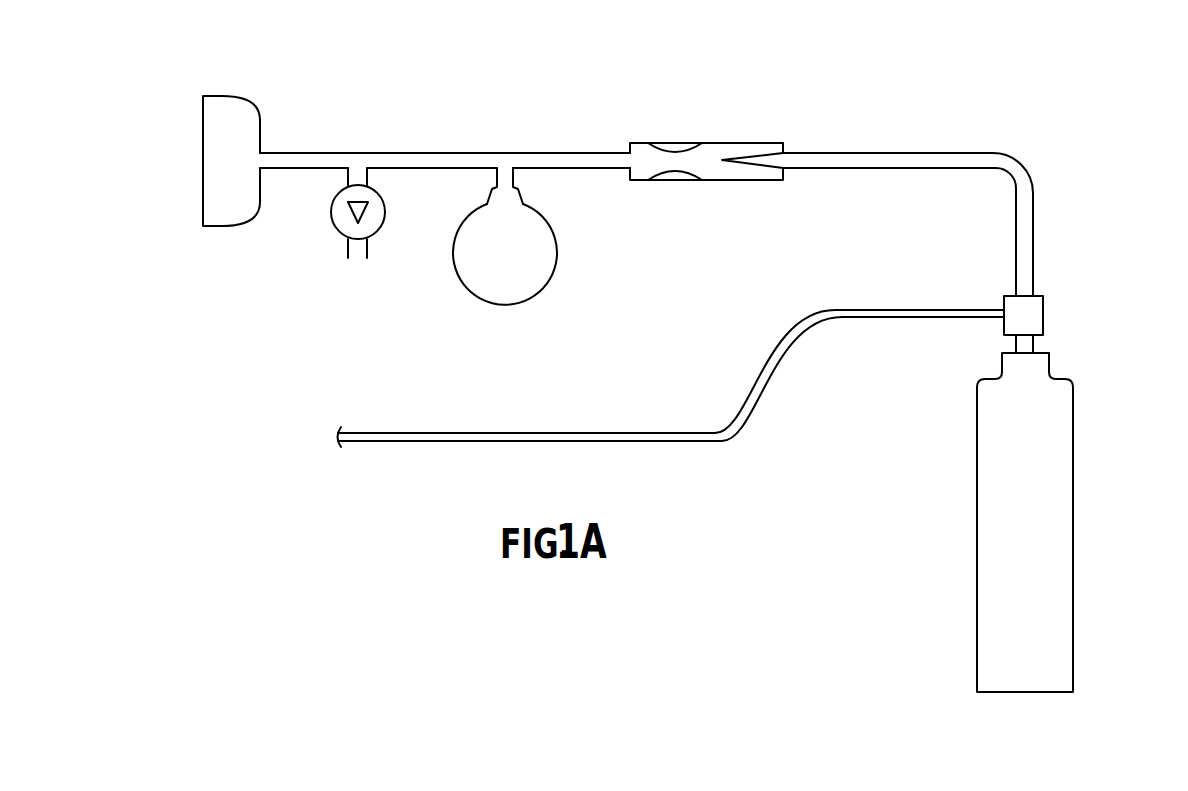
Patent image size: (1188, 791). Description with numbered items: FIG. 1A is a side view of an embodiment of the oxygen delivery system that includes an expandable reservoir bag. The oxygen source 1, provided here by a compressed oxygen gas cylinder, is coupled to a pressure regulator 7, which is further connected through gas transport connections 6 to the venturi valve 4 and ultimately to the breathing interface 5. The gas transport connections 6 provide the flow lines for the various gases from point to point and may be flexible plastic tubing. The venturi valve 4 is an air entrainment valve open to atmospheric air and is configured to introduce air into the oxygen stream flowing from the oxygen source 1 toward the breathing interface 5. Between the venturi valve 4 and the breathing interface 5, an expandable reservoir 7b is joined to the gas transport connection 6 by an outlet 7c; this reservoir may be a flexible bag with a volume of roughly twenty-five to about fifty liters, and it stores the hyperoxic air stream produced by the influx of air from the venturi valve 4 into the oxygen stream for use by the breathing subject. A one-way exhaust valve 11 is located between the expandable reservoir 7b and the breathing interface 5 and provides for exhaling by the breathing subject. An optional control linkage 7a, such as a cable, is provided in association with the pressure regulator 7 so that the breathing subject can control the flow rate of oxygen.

The oxygen source 1 is at (1047, 541).
The venturi valve 4 is at (722, 133).
The breathing interface 5 is at (197, 182).
The gas transport connections 6 is at (543, 150).
The pressure regulator 7 is at (1053, 304).
The control linkage 7a is at (760, 445).
The expandable reservoir 7b is at (567, 260).
The outlet 7c is at (523, 181).
The one-way exhaust valve 11 is at (328, 214).